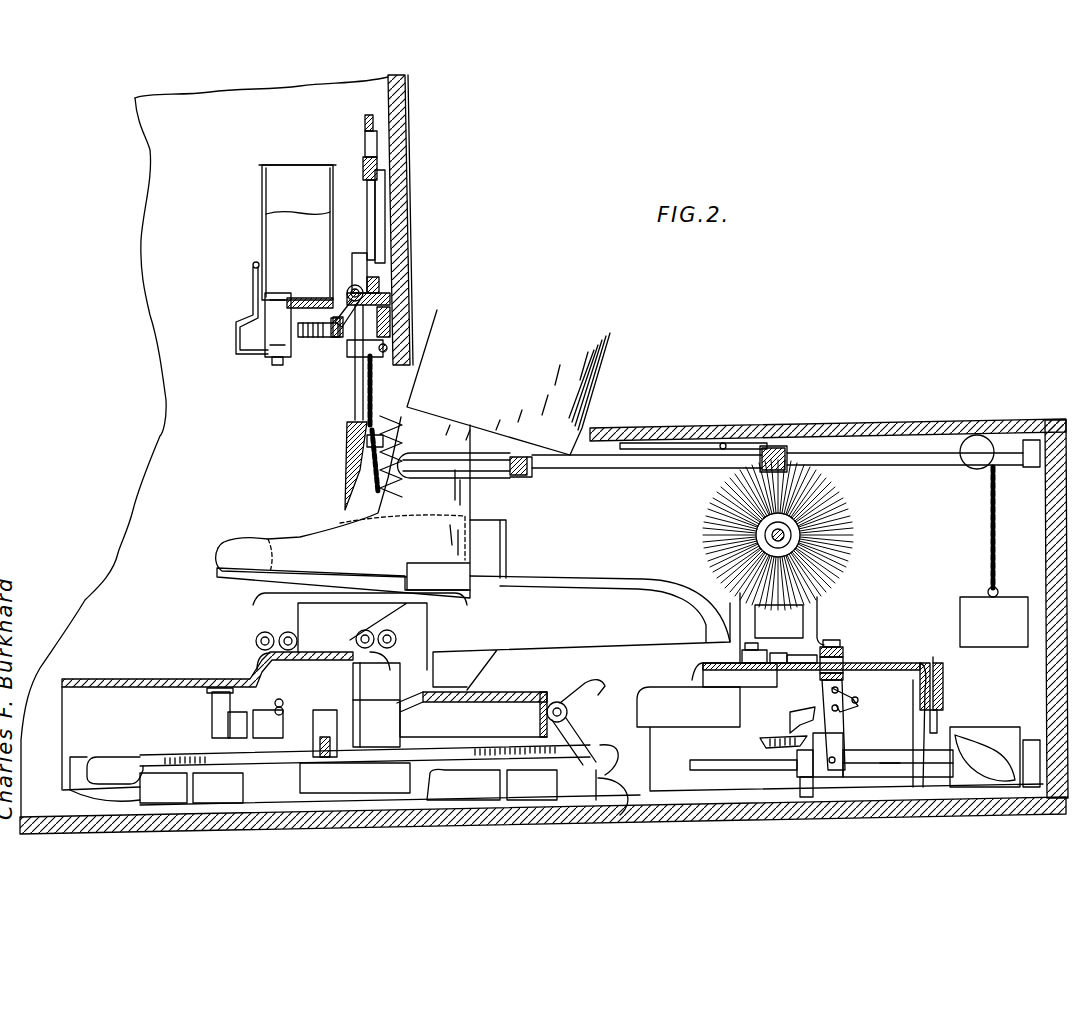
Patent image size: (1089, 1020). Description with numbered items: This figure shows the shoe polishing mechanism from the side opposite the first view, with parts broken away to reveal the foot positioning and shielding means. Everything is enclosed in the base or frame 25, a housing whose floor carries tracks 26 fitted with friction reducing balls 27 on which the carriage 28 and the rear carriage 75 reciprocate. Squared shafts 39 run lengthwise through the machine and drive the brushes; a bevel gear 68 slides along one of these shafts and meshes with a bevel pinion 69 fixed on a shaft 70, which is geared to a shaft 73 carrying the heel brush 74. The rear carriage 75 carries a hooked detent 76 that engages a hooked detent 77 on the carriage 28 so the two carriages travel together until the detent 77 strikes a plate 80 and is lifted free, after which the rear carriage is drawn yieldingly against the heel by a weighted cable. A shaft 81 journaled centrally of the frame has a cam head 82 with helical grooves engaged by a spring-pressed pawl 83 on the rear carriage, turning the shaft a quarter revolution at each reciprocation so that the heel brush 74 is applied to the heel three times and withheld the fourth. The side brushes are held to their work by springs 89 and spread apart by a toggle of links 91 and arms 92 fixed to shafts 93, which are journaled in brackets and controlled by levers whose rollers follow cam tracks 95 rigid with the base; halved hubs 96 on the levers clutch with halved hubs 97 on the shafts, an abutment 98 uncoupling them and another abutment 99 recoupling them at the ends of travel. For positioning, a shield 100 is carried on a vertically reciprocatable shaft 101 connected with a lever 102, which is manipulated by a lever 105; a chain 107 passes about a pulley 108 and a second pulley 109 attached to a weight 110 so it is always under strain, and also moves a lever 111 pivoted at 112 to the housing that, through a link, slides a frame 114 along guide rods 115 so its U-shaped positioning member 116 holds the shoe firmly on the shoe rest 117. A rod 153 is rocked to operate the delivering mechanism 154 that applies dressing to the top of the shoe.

The base or frame 25 is at (741, 813).
The tracks 26 is at (644, 811).
The balls 27 is at (587, 813).
The carriage 28 is at (497, 700).
The squared shafts 39 is at (708, 757).
The bevel gear 68 is at (838, 711).
The bevel pinion 69 is at (767, 749).
The shaft 70 is at (737, 677).
The shaft 73 is at (791, 536).
The heel brush 74 is at (840, 584).
The rear carriage 75 is at (880, 661).
The hooked detent 76 is at (820, 710).
The hooked detent 77 is at (565, 702).
The plate 80 is at (599, 762).
The shaft 81 is at (893, 757).
The cam head 82 is at (1007, 730).
The spring-pressed pawl 83 is at (933, 663).
The springs 89 is at (262, 637).
The links 91 is at (328, 758).
The arms 92 is at (340, 730).
The shafts 93 is at (212, 710).
The cam tracks 95 is at (400, 753).
The halved hubs 96 is at (177, 737).
The halved hubs 97 is at (246, 716).
The abutment 98 is at (87, 757).
The abutment 99 is at (592, 758).
The shield 100 is at (348, 470).
The shaft 101 is at (378, 208).
The lever 102 is at (382, 170).
The lever 105 is at (362, 120).
The chain or cable 107 is at (366, 413).
The pulley 108 is at (343, 503).
The pulley 109 is at (975, 433).
The weight 110 is at (1010, 600).
The lever 111 is at (648, 445).
The pivot 112 is at (727, 447).
The frame 114 is at (527, 473).
The guide rods 115 is at (913, 458).
The U-shaped positioning member 116 is at (470, 473).
The shoe rest 117 is at (342, 593).
The rod 153 is at (373, 288).
The delivering mechanism 154 is at (263, 309).